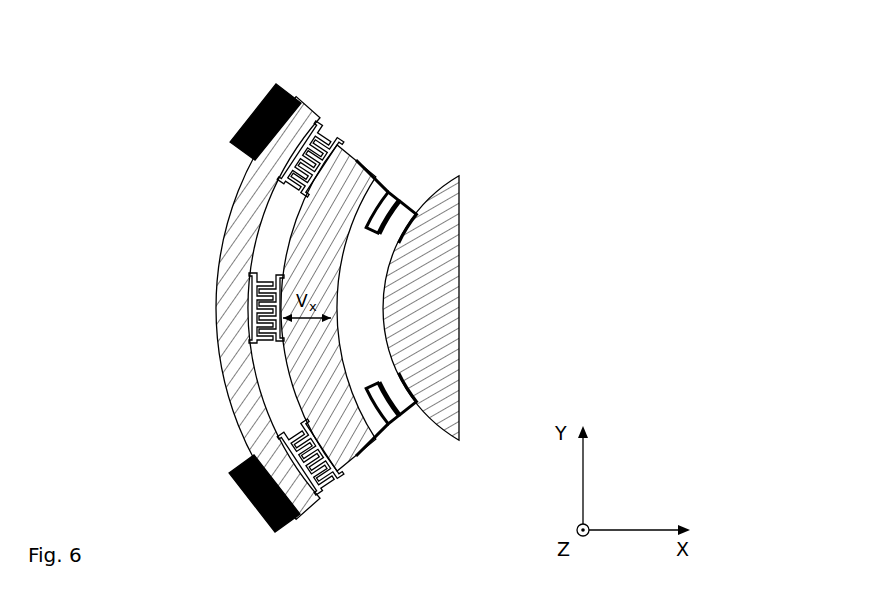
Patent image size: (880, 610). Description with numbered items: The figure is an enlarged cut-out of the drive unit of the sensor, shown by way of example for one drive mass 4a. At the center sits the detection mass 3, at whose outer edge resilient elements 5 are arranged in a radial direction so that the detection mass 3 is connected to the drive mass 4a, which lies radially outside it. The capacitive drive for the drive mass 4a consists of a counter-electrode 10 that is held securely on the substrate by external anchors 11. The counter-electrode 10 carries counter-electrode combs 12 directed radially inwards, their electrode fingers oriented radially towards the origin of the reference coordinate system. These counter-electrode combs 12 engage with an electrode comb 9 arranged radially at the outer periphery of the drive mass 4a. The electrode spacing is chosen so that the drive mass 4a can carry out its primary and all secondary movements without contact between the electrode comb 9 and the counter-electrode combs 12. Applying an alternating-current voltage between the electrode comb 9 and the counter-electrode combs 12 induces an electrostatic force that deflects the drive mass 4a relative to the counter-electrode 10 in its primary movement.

The detection mass 3 is at (383, 295).
The drive mass 4a is at (284, 308).
The resilient elements 5 is at (378, 239).
The electrode comb 9 is at (328, 153).
The counter-electrode 10 is at (226, 250).
The external anchors 11 is at (240, 121).
The counter-electrode combs 12 is at (307, 132).